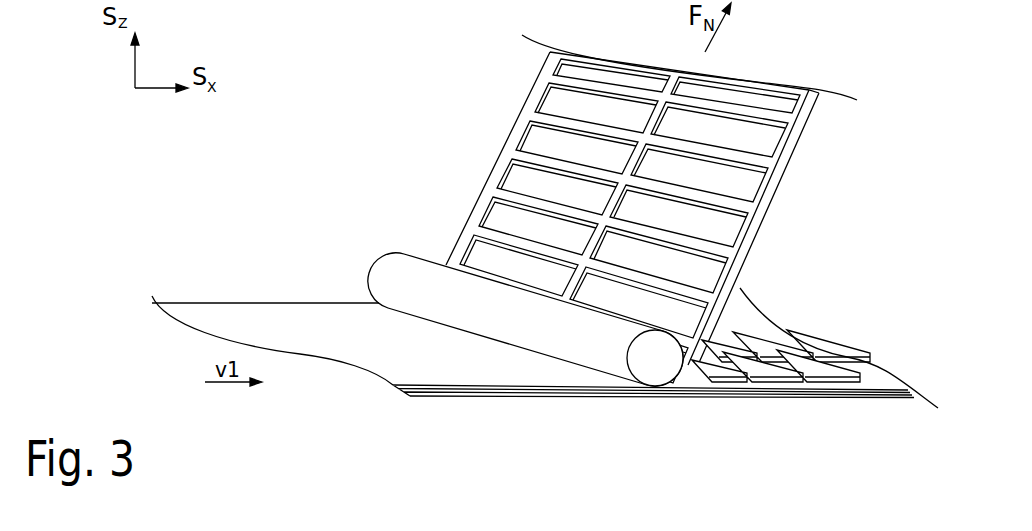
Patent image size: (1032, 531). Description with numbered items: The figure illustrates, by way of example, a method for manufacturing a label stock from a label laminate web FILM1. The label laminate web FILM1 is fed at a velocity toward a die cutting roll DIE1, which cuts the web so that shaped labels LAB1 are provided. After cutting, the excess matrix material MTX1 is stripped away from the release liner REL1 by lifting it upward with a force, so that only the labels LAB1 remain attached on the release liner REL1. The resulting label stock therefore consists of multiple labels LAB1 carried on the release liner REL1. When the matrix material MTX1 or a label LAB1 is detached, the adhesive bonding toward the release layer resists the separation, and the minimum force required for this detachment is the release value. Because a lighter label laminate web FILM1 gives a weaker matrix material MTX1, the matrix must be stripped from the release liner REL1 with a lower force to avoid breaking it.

The excess matrix material MTX1 is at (785, 145).
The labels LAB1 is at (828, 365).
The die cutting roll DIE1 is at (443, 307).
The label laminate web FILM1 is at (252, 312).
The release liner REL1 is at (445, 398).